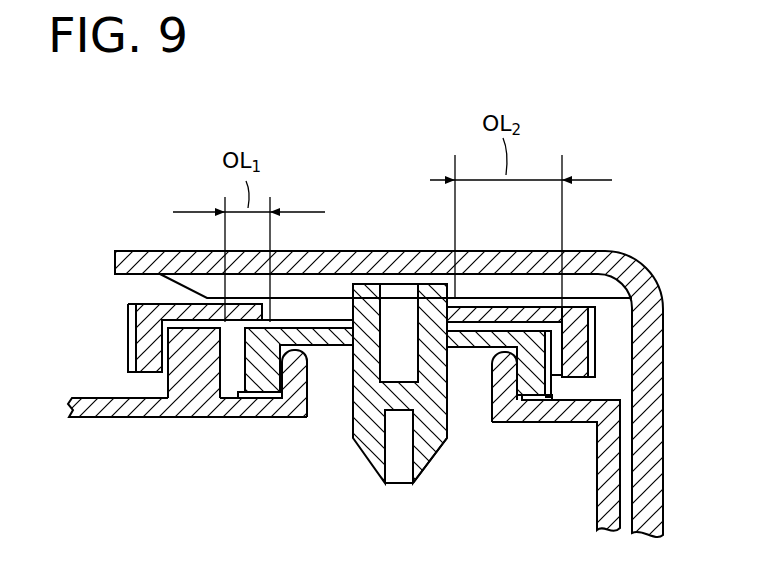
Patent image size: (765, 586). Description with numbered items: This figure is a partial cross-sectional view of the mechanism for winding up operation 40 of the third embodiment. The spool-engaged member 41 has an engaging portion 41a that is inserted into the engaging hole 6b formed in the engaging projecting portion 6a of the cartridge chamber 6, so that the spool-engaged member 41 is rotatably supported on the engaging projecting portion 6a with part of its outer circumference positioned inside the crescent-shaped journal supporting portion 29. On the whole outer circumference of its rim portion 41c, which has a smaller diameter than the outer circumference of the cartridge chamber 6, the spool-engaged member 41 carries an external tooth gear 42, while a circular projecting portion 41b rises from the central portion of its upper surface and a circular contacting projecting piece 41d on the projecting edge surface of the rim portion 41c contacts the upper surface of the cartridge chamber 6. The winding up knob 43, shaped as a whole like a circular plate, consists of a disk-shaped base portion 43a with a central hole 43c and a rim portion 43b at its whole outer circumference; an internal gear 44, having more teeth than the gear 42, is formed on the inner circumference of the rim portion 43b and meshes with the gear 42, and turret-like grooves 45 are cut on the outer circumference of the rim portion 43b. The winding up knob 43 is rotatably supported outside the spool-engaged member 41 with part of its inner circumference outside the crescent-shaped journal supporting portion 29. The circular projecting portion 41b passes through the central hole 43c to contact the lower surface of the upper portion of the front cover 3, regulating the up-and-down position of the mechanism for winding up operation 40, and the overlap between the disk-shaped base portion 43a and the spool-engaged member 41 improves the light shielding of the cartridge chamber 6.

The front cover 3 is at (651, 272).
The cartridge chamber 6 is at (336, 429).
The engaging projecting portion 6a is at (298, 363).
The engaging hole 6b is at (470, 362).
The crescent-shaped journal supporting portion 29 is at (168, 388).
The mechanism for winding up operation 40 is at (110, 325).
The spool-engaged member 41 is at (385, 367).
The engaging portion 41a is at (428, 462).
The circular projecting portion 41b is at (374, 276).
The rim portion 41c is at (238, 400).
The circular contacting projecting piece 41d is at (523, 401).
The gear 42 is at (583, 298).
The winding up knob 43 is at (371, 284).
The disk-shaped base portion 43a is at (142, 304).
The rim portion 43b is at (143, 347).
The central hole 43c is at (330, 318).
The internal gear 44 is at (552, 376).
The turret-like grooves 45 is at (130, 338).